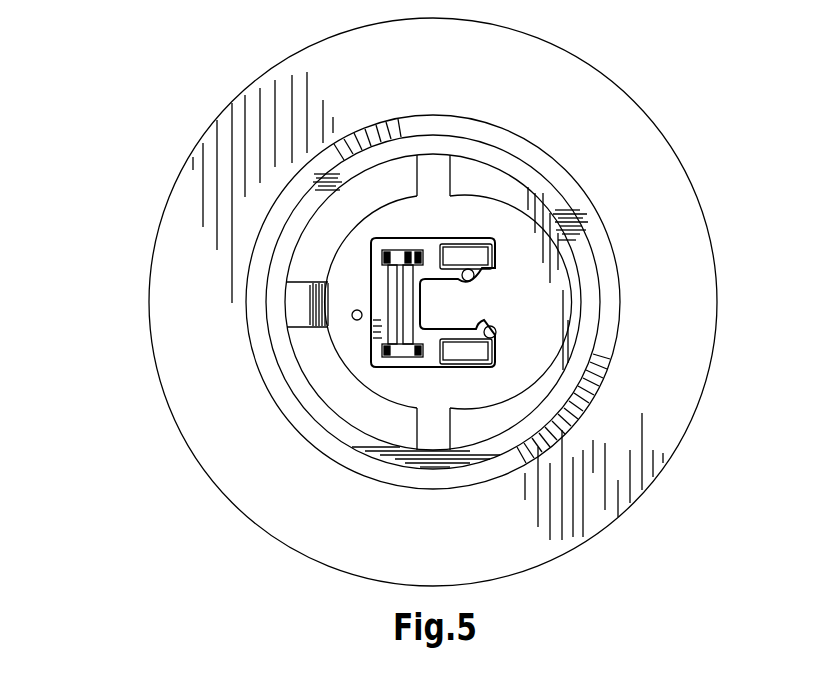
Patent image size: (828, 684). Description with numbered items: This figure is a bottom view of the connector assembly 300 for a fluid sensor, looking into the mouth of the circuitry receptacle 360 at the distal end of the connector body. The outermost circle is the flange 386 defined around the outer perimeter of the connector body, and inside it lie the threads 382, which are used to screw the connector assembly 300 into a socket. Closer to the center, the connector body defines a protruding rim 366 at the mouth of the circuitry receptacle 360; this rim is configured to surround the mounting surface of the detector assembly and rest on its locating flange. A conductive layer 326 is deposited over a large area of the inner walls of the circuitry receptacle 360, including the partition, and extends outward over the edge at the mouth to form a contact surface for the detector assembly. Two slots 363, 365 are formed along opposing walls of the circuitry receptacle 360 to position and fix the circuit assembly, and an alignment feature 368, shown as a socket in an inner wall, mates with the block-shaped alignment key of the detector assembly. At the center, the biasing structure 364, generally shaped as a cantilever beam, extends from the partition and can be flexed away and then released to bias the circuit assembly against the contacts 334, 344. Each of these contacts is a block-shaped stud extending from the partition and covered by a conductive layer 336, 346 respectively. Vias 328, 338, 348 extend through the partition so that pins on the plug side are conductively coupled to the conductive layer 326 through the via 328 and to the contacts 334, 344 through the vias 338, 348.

The connector assembly 300 is at (142, 141).
The flange 386 is at (177, 240).
The threads 382 is at (614, 302).
The protruding rim 366 is at (592, 275).
The conductive layer 326 is at (385, 190).
The slot 363 is at (433, 168).
The slot 365 is at (433, 438).
The alignment feature 368 is at (294, 304).
The biasing structure 364 is at (368, 412).
The circuitry receptacle 360 is at (440, 394).
The conductive contact 344 is at (457, 238).
The conductive layer 346 is at (491, 252).
The via 348 is at (476, 276).
The conductive layer 336 is at (493, 353).
The via 338 is at (497, 331).
The via 328 is at (352, 320).
The conductive contact 334 is at (462, 383).